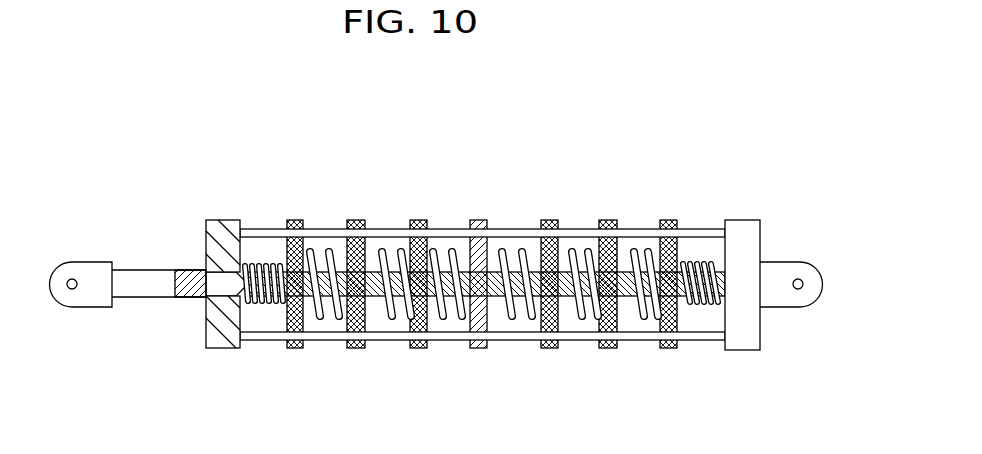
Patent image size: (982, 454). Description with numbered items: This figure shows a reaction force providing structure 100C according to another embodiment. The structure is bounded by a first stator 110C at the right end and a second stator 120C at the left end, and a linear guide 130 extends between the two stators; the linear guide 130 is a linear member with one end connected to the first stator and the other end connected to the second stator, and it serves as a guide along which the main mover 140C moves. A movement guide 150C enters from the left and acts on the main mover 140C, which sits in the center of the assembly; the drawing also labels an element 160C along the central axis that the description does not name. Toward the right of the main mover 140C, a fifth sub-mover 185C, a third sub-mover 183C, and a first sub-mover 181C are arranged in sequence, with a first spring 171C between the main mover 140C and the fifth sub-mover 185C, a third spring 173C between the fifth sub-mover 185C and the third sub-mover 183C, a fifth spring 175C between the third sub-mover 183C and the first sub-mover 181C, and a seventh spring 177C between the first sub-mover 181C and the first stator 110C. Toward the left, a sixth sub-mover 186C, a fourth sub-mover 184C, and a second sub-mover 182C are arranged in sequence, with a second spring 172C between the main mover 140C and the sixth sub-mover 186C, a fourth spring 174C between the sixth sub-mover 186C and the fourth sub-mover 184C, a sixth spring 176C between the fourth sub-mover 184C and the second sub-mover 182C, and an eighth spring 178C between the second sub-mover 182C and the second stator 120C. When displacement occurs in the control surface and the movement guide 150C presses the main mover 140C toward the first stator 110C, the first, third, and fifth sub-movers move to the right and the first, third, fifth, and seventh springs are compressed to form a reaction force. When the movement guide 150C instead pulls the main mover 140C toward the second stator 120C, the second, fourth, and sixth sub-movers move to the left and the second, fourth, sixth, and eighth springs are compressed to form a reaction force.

The reaction force providing structure 100C is at (145, 118).
The first stator 110C is at (745, 220).
The second stator 120C is at (225, 220).
The linear guide 130 is at (699, 229).
The main mover 140C is at (478, 220).
The movement guide 150C is at (137, 275).
The shaft 160C is at (488, 302).
The first spring 171C is at (518, 316).
The second spring 172C is at (446, 312).
The third spring 173C is at (576, 314).
The fourth spring 174C is at (383, 312).
The fifth spring 175C is at (636, 316).
The sixth spring 176C is at (326, 318).
The seventh spring 177C is at (697, 304).
The eighth spring 178C is at (262, 305).
The first sub-mover 181C is at (668, 220).
The second sub-mover 182C is at (296, 220).
The third sub-mover 183C is at (607, 220).
The fourth sub-mover 184C is at (356, 220).
The fifth sub-mover 185C is at (549, 220).
The sixth sub-mover 186C is at (418, 220).